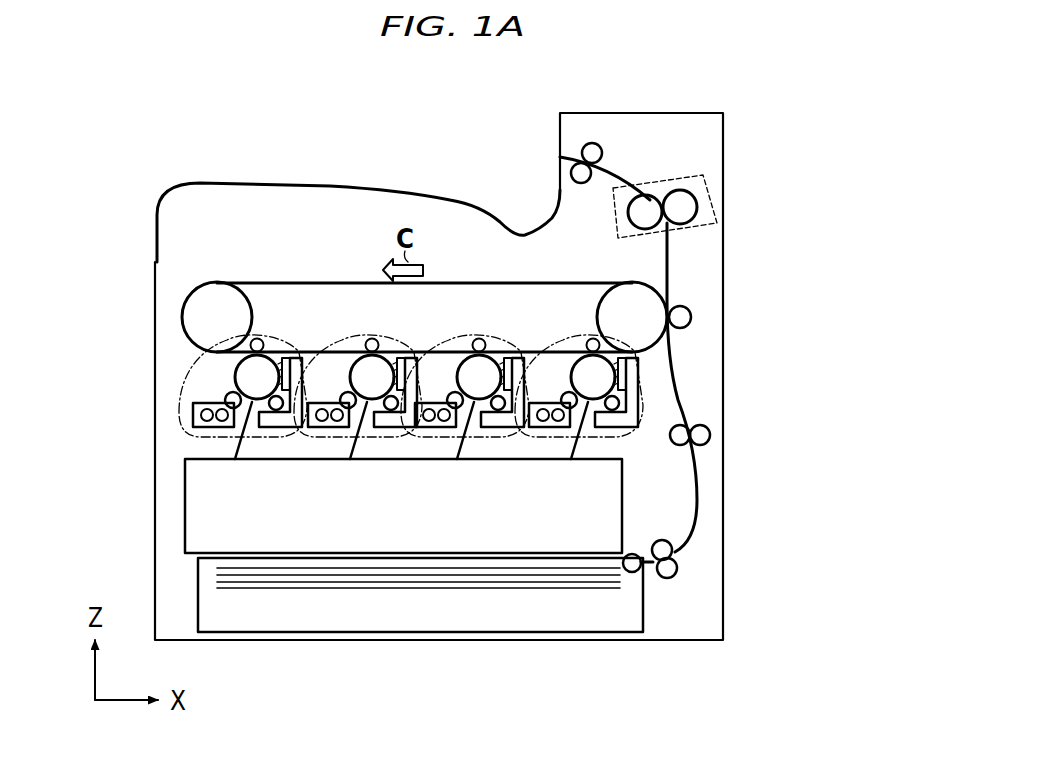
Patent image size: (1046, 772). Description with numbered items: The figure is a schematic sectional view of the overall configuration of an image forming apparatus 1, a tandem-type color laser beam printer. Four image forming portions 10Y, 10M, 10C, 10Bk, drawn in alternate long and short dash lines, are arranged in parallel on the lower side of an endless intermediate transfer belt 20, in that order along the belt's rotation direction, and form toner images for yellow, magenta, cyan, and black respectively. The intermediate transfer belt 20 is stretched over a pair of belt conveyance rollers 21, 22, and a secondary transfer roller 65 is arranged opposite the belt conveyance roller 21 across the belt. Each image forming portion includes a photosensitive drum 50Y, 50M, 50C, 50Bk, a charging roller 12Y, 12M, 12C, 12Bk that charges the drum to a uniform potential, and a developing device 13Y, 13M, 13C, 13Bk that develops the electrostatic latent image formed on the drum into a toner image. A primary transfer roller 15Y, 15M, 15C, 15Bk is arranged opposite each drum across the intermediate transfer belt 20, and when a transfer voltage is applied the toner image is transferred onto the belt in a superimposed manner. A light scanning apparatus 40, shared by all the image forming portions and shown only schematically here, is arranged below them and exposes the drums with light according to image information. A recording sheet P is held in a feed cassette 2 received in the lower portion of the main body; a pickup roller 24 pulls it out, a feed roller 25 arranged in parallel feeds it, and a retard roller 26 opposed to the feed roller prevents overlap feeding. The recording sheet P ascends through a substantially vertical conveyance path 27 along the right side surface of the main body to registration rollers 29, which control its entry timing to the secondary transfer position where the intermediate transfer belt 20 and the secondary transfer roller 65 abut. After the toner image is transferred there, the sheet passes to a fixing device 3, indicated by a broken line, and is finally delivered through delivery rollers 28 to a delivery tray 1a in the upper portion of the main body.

The image forming apparatus 1 is at (173, 366).
The delivery tray 1a is at (473, 205).
The feed cassette 2 is at (643, 620).
The fixing device 3 is at (703, 182).
The intermediate transfer belt 20 is at (367, 283).
The belt conveyance roller 21 is at (655, 292).
The belt conveyance roller 22 is at (218, 313).
The pickup roller 24 is at (632, 563).
The feed roller 25 is at (672, 548).
The retard roller 26 is at (668, 567).
The conveyance path 27 is at (667, 267).
The delivery rollers 28 is at (587, 143).
The registration rollers 29 is at (701, 434).
The light scanning apparatus 40 is at (625, 492).
The secondary transfer roller 65 is at (691, 316).
The recording sheet P is at (512, 588).
The image forming portion 10Y is at (172, 352).
The image forming portion 10M is at (307, 421).
The image forming portion 10C is at (435, 407).
The image forming portion 10Bk is at (647, 280).
The charging roller 12Y is at (277, 407).
The charging roller 12M is at (392, 407).
The charging roller 12C is at (499, 407).
The charging roller 12Bk is at (613, 407).
The developing device 13Y is at (195, 412).
The developing device 13M is at (313, 403).
The developing device 13C is at (428, 403).
The developing device 13Bk is at (537, 402).
The primary transfer roller 15Y is at (257, 345).
The primary transfer roller 15M is at (372, 377).
The primary transfer roller 15C is at (479, 377).
The primary transfer roller 15Bk is at (594, 350).
The photosensitive drum 50Y is at (248, 376).
The photosensitive drum 50M is at (373, 345).
The photosensitive drum 50C is at (480, 345).
The photosensitive drum 50Bk is at (594, 378).